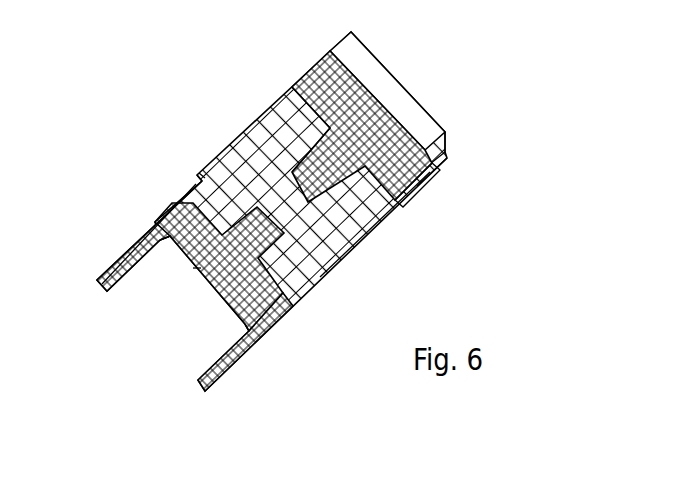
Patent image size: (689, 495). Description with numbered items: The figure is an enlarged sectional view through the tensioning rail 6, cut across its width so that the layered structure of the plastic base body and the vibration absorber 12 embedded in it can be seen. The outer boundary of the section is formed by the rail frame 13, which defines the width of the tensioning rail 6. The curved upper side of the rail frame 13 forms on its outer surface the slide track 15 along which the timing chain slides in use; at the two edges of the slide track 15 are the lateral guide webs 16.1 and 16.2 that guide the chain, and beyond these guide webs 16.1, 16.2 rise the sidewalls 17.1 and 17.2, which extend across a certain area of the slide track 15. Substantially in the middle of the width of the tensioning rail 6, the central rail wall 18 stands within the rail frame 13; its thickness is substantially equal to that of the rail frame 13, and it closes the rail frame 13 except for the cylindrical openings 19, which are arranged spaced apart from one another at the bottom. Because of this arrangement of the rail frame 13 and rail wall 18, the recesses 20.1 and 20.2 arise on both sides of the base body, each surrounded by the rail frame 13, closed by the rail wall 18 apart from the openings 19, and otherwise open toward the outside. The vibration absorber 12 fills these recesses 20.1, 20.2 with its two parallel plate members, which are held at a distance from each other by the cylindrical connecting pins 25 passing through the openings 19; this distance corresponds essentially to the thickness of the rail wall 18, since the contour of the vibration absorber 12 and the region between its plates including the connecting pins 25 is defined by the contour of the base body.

The tensioning rail 6 is at (288, 241).
The vibration absorber 12 is at (312, 288).
The rail frame 13 is at (413, 190).
The slide track 15 is at (196, 270).
The lateral guide web 16.1 is at (154, 242).
The lateral guide web 16.2 is at (247, 323).
The sidewall 17.1 is at (98, 278).
The sidewall 17.2 is at (217, 381).
The central rail wall 18 is at (283, 147).
The cylindrical openings 19 is at (323, 273).
The recess 20.1 is at (390, 208).
The recess 20.2 is at (195, 178).
The cylindrical connecting pins 25 is at (245, 165).